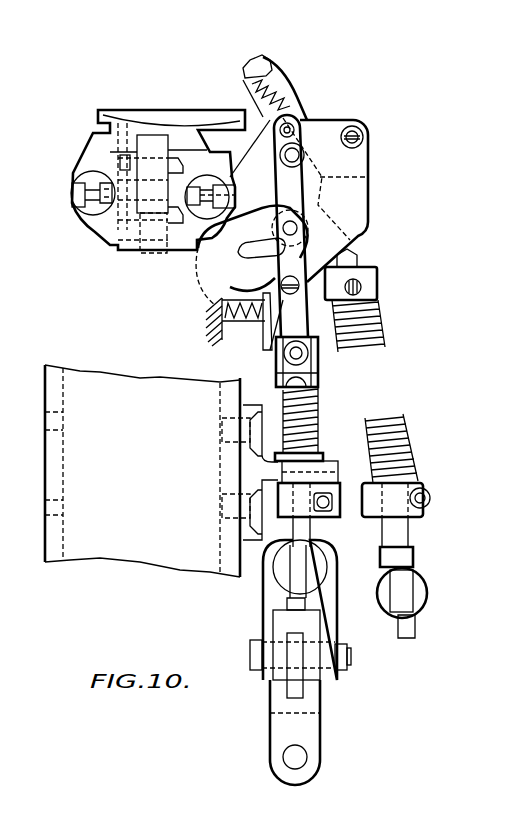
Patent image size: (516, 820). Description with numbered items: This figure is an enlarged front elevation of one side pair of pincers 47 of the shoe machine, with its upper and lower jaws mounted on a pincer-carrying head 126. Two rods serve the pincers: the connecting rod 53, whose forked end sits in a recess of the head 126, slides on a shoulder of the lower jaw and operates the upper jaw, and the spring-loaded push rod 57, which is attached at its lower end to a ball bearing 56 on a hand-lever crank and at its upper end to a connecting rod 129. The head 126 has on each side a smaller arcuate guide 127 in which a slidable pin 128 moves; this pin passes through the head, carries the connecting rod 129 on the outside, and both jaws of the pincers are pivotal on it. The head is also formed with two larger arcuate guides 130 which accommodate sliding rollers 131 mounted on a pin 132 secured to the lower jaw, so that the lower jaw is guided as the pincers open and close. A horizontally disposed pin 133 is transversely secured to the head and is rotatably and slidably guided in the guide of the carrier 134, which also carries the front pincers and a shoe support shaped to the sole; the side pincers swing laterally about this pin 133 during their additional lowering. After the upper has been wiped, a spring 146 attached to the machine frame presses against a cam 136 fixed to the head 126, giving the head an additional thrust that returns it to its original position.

The side pair of pincers 47 is at (245, 80).
The connecting rod 53 is at (403, 447).
The ball bearing 56 is at (270, 610).
The push rod 57 is at (307, 417).
The head 126 is at (352, 195).
The smaller arcuate guide 127 is at (300, 120).
The slidable pin 128 is at (284, 125).
The connecting rod 129 is at (320, 177).
The larger arcuate guide 130 is at (253, 257).
The sliding roller 131 is at (300, 225).
The pin 132 is at (346, 258).
The horizontally disposed pin 133 is at (207, 178).
The carrier 134 is at (94, 153).
The cam 136 is at (270, 327).
The spring 146 is at (210, 322).